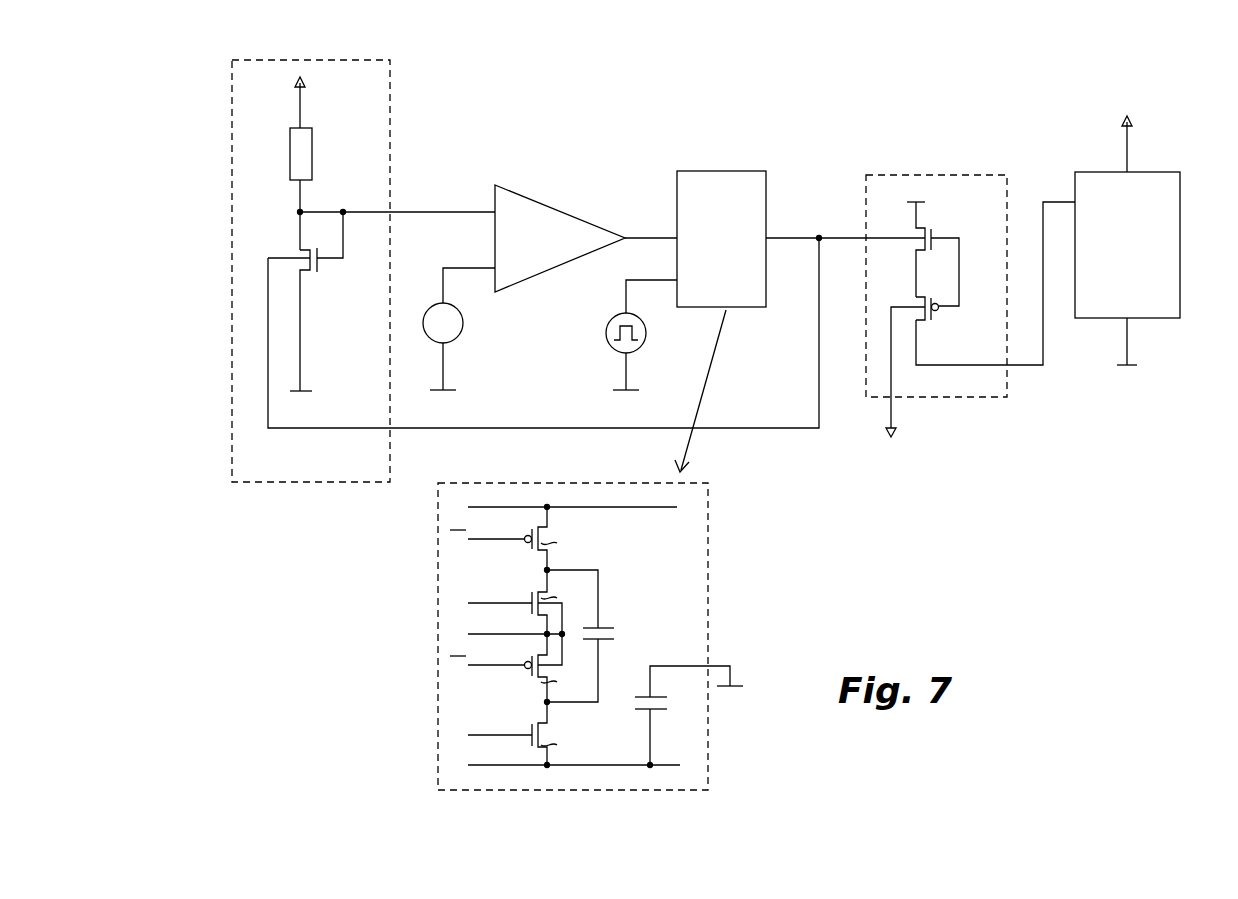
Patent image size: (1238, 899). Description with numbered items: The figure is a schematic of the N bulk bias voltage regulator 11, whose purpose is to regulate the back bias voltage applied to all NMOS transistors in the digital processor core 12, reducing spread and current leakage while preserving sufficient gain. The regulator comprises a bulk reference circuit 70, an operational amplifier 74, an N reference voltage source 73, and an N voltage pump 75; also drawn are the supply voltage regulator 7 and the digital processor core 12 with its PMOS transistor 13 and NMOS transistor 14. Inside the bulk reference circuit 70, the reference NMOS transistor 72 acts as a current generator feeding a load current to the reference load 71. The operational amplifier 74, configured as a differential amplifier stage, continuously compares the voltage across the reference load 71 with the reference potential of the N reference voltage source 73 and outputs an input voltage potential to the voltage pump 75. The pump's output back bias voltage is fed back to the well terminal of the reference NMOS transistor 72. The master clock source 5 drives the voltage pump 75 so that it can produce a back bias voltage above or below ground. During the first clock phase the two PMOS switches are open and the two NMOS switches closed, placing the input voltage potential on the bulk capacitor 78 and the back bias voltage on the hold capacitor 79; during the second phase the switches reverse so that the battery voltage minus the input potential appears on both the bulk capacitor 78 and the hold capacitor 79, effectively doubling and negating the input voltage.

The N bulk bias voltage regulator 11 is at (752, 53).
The bulk reference circuit 70 is at (320, 482).
The reference load 71 is at (312, 148).
The reference NMOS transistor 72 is at (318, 270).
The N reference voltage source 73 is at (422, 322).
The operational amplifier 74 is at (546, 203).
The N voltage pump 75 is at (720, 171).
The master clock source 5 is at (646, 341).
The digital processor core 12 is at (968, 397).
The PMOS transistor 13 is at (936, 318).
The NMOS transistor 14 is at (934, 230).
The supply voltage regulator 7 is at (1180, 218).
The bulk capacitor 78 is at (607, 627).
The hold capacitor 79 is at (655, 712).